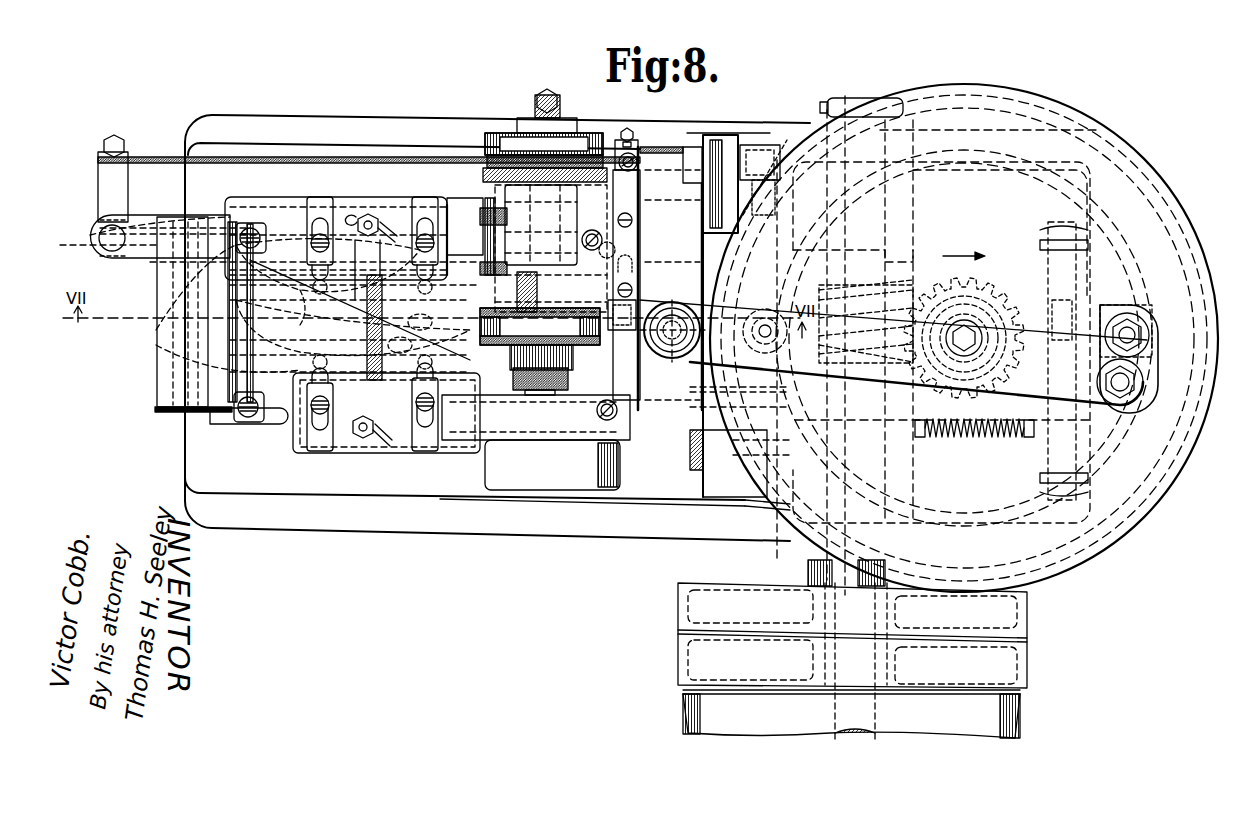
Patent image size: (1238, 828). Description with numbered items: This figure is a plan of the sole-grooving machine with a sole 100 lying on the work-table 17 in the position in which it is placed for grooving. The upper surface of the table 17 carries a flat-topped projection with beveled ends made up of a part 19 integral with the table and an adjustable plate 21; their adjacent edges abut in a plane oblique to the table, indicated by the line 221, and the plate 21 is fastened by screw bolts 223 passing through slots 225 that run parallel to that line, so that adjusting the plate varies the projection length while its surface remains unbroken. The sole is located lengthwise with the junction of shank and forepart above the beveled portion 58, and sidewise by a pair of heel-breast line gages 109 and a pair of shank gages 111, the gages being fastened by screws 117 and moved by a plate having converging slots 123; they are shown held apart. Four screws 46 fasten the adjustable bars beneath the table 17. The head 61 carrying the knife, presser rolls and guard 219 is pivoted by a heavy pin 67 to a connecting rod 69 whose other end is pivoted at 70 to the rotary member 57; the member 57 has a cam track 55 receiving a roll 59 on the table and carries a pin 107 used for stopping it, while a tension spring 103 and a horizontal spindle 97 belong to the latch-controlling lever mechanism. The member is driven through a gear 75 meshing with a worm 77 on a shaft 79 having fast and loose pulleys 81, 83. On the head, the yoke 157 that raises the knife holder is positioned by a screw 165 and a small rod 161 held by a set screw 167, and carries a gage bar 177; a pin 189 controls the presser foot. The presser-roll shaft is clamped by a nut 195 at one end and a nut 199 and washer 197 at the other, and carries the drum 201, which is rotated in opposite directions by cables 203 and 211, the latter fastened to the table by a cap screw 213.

The work-table 17 is at (160, 375).
The part of the projection integral with the table 19 is at (278, 385).
The adjustable plate 21 is at (280, 255).
The screws 46 is at (248, 227).
The cam track 55 is at (783, 507).
The rotary member 57 is at (1145, 506).
The beveled portion 58 is at (240, 365).
The roll 59 is at (938, 345).
The head 61 is at (692, 165).
The heavy pin 67 is at (677, 312).
The belt 69 is at (1032, 391).
The pivot 70 is at (1143, 382).
The gear 75 is at (982, 275).
The worm 77 is at (913, 272).
The shaft 79 is at (853, 733).
The fast pulley 81 is at (1020, 655).
The loose pulley 83 is at (1022, 713).
The horizontal spindle 97 is at (1050, 228).
The sole 100 is at (112, 356).
The tension spring 103 is at (950, 441).
The pin 107 is at (1130, 320).
The heel-breast line gages 109 is at (420, 215).
The shank gages 111 is at (318, 232).
The screws 117 is at (332, 240).
The slots 123 is at (396, 330).
The yoke 157 is at (634, 150).
The small rod 161 is at (672, 152).
The screw 165 is at (628, 152).
The set screw 167 is at (660, 128).
The small bar 177 is at (633, 207).
The pin 189 is at (527, 340).
The nut 195 is at (538, 390).
The washer 197 is at (533, 112).
The nut 199 is at (553, 92).
The drum 201 is at (490, 135).
The cable 203 is at (358, 157).
The cable 211 is at (480, 172).
The cap screw 213 is at (767, 170).
The sheet metal guard 219 is at (485, 232).
The line 221 is at (290, 292).
The screw bolts 223 is at (367, 215).
The slots 225 is at (382, 437).